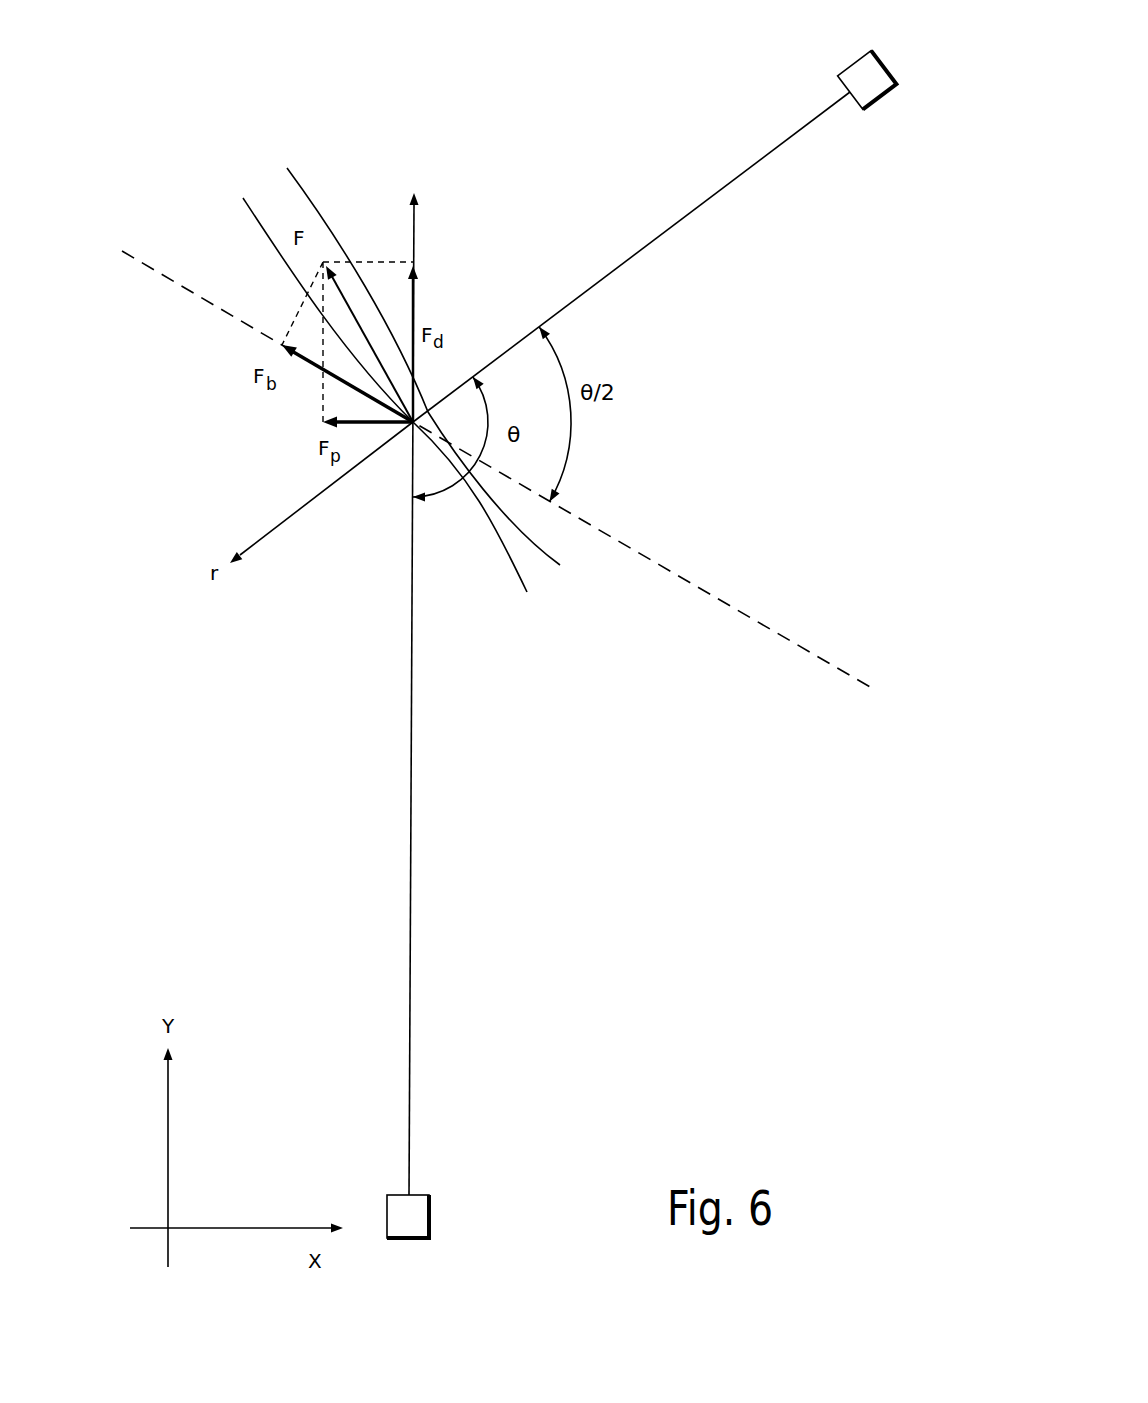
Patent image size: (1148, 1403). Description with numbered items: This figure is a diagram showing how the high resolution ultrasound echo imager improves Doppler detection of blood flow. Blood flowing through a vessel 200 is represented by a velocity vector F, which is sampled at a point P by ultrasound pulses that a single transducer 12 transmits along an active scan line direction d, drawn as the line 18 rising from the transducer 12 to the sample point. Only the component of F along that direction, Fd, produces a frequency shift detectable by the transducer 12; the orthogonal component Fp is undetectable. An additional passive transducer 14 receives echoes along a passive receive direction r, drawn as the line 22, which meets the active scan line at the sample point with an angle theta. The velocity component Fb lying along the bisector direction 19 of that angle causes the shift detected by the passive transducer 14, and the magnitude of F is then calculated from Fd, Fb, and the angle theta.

The transducer 12 is at (429, 1230).
The passive transducer 14 is at (889, 92).
The first beam 18 is at (411, 877).
The second beam 22 is at (673, 226).
The bisector direction 19 is at (633, 552).
The vessel 200 is at (506, 568).